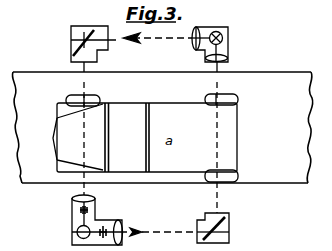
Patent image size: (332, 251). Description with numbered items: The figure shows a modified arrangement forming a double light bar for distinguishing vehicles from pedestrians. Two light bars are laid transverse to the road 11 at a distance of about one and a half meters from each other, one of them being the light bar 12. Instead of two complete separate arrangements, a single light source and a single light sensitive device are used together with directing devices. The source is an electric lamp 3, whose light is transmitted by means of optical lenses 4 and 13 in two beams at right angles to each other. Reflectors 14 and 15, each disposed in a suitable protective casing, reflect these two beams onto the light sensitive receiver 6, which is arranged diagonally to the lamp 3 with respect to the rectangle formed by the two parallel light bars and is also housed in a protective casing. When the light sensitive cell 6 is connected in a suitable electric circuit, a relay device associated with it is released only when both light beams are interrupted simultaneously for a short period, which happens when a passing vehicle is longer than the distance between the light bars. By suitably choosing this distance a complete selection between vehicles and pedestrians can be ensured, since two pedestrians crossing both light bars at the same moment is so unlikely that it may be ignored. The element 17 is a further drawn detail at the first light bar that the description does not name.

The signal lamp 3 is at (229, 37).
The lamp socket 4 is at (228, 59).
The relay device 6 is at (72, 232).
The conveyor band 11 is at (162, 127).
The contact member 12 is at (214, 75).
The connecting line 13 is at (193, 41).
The switch 14 is at (71, 40).
The switch 15 is at (229, 236).
The contact member 17 is at (81, 75).